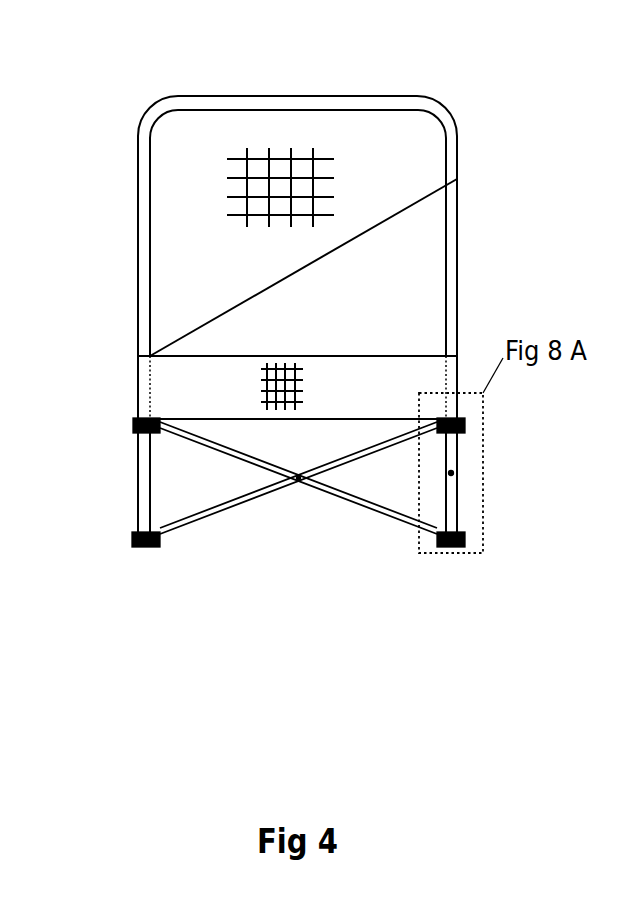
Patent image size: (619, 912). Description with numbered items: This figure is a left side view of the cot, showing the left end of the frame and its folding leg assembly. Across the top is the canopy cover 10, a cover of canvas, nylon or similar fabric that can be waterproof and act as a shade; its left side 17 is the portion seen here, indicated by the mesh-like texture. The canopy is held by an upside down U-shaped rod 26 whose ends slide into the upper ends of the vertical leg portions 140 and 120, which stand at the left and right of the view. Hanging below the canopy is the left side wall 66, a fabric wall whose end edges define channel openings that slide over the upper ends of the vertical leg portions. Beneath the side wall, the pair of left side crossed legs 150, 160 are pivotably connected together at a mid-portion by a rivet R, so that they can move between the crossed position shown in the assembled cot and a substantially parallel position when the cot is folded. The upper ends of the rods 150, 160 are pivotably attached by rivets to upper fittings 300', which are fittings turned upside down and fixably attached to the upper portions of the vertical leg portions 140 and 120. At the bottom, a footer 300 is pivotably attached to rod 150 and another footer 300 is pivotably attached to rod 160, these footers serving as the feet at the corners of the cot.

The canopy cover 10 is at (290, 137).
The upside down U-shaped rod 26 is at (457, 235).
The left side 17 is at (325, 228).
The left side wall 66 is at (339, 382).
The vertical leg portion 140 is at (140, 489).
The vertical leg portion 120 is at (457, 492).
The left side crossed leg 160 is at (198, 508).
The left side crossed leg 150 is at (340, 495).
The rivet R is at (298, 473).
The upper fitting 300' is at (303, 359).
The footer 300 is at (304, 570).